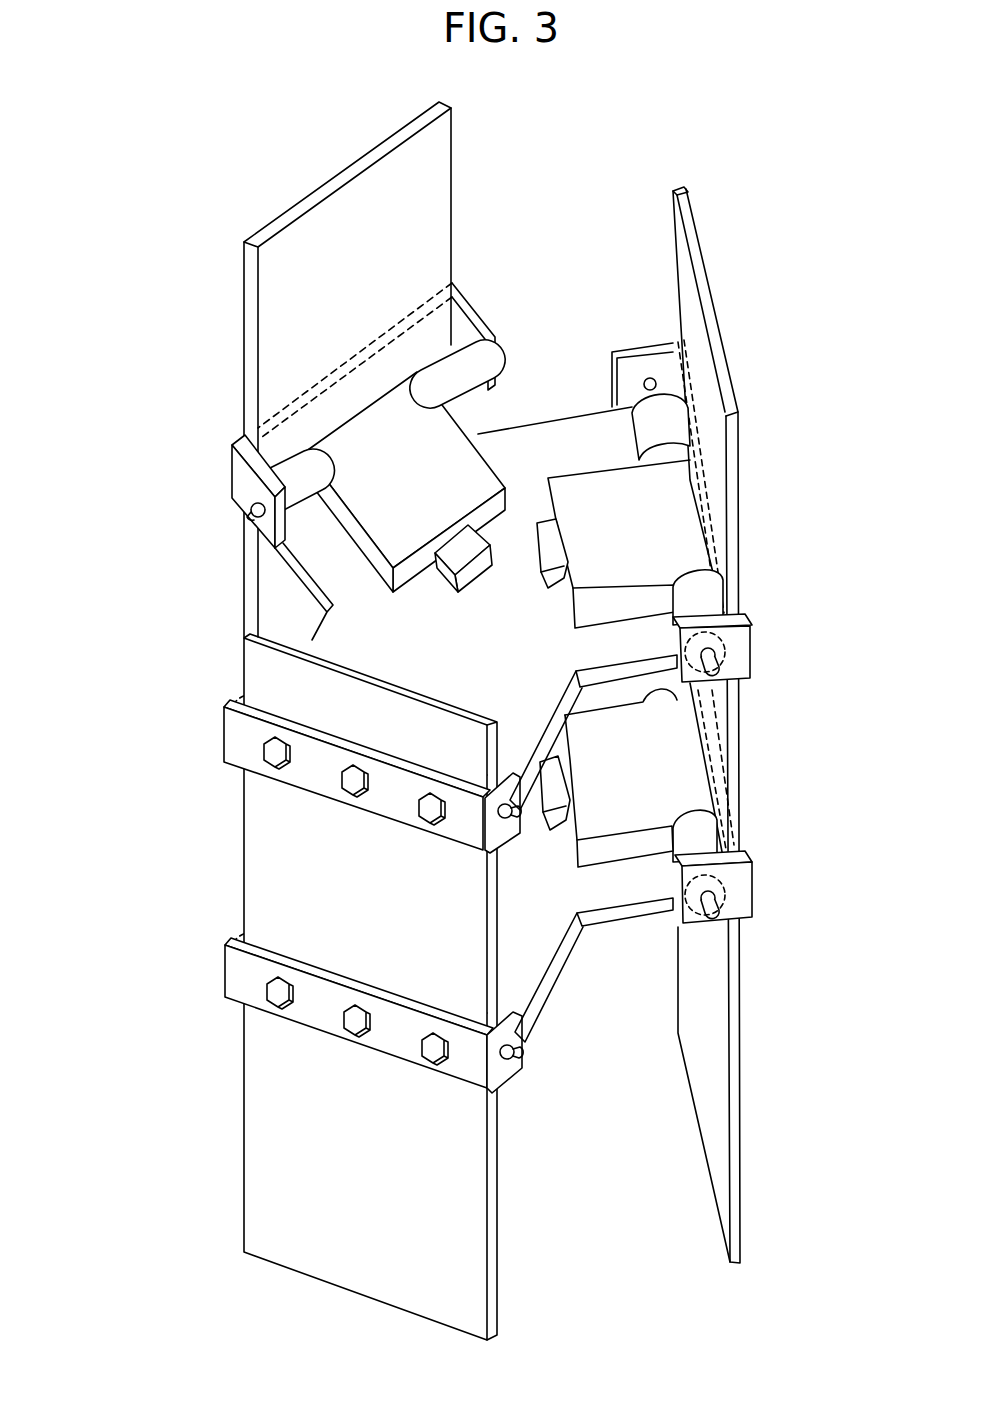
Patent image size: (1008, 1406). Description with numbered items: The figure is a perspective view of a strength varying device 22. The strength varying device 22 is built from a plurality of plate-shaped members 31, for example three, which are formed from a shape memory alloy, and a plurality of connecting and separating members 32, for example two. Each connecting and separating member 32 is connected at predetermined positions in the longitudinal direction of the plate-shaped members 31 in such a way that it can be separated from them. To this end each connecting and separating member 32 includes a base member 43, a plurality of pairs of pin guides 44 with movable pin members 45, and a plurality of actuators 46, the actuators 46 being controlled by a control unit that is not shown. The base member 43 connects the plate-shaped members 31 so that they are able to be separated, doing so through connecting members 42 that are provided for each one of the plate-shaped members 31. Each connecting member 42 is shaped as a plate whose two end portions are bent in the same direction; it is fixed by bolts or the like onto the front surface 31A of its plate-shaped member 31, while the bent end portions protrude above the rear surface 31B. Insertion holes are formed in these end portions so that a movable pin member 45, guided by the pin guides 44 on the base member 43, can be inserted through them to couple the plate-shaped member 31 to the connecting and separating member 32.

The strength varying device 22 is at (114, 313).
The plate-shaped member 31 is at (437, 172).
The front surface 31A is at (268, 818).
The rear surface 31B is at (276, 278).
The connecting and separating member 32 is at (600, 680).
The connecting member 42 is at (238, 470).
The base member 43 is at (500, 428).
The pin guide 44 is at (438, 372).
The movable pin member 45 is at (649, 378).
The actuator 46 is at (402, 532).